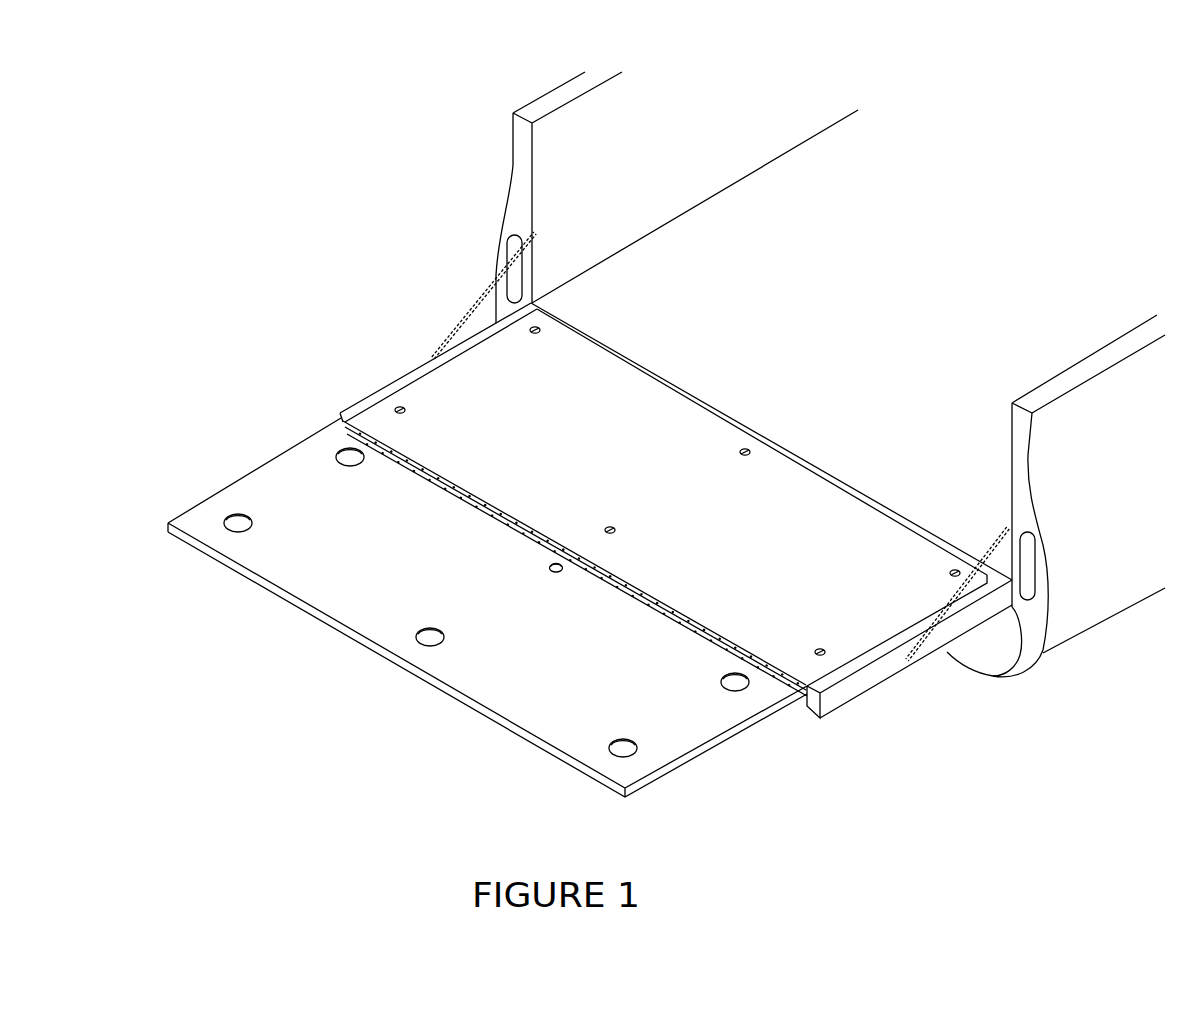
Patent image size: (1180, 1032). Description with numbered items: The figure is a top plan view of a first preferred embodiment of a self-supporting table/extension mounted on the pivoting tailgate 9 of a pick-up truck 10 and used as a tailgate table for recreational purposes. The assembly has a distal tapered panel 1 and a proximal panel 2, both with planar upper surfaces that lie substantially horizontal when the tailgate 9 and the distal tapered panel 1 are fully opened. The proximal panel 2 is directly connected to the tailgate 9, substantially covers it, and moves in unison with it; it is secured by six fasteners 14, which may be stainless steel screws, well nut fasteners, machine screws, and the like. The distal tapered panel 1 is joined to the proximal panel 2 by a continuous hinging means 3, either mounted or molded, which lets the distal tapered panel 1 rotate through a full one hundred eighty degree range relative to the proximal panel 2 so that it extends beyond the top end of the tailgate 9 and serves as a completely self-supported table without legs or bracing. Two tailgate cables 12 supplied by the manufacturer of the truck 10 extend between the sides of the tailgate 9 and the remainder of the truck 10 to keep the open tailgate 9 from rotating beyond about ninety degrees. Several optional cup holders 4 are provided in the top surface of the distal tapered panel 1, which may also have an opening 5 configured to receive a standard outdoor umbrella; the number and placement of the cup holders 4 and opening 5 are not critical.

The distal tapered panel 1 is at (508, 673).
The proximal panel 2 is at (810, 517).
The continuous hinging means 3 is at (712, 616).
The cup holders 4 is at (243, 515).
The opening 5 is at (560, 562).
The tailgate 9 is at (868, 688).
The pick-up truck 10 is at (1110, 418).
The tailgate cables 12 is at (920, 648).
The fasteners 14 is at (747, 447).